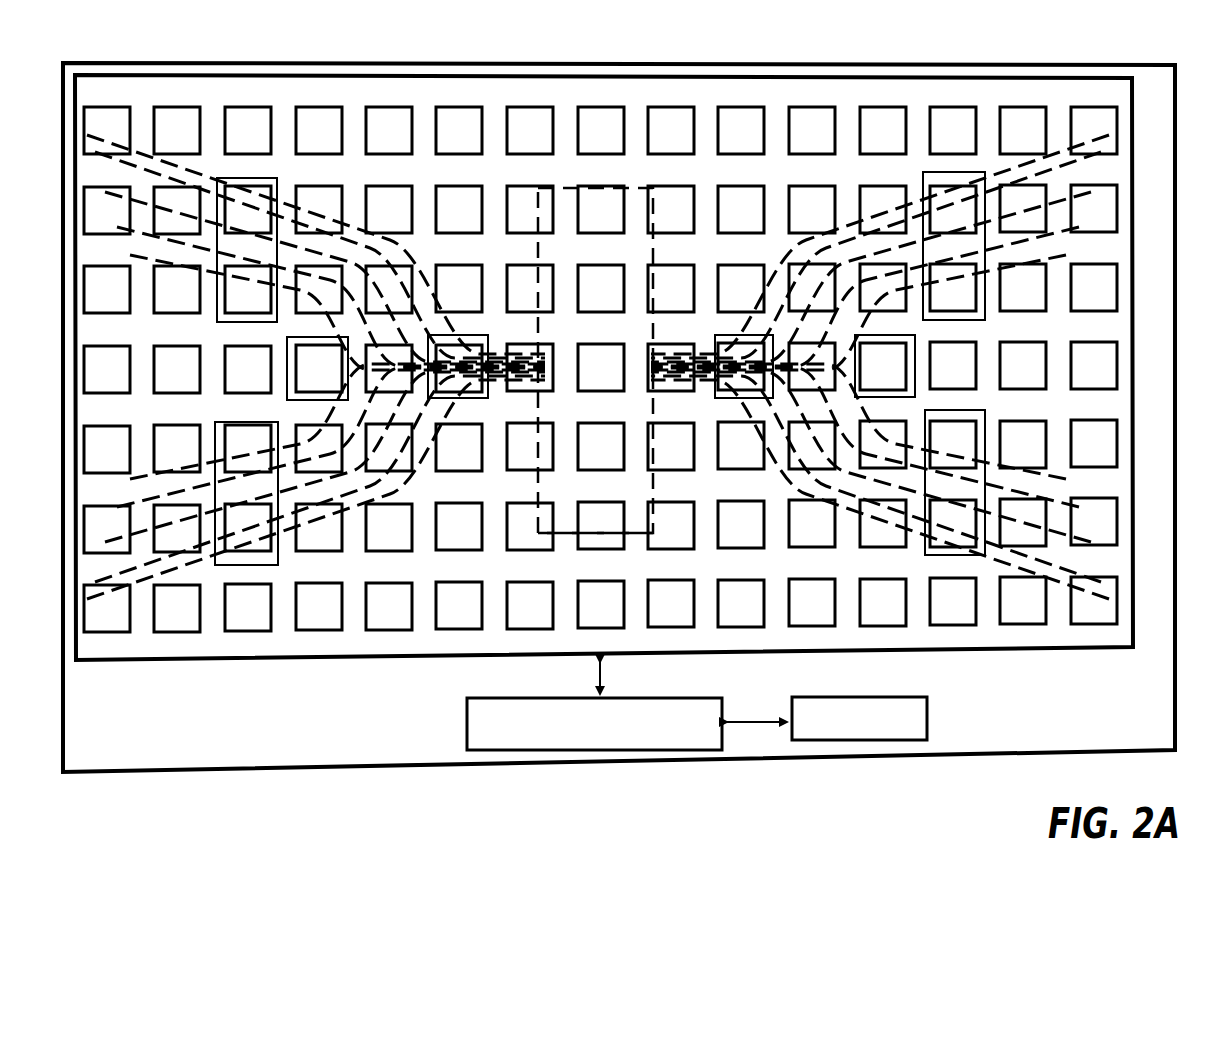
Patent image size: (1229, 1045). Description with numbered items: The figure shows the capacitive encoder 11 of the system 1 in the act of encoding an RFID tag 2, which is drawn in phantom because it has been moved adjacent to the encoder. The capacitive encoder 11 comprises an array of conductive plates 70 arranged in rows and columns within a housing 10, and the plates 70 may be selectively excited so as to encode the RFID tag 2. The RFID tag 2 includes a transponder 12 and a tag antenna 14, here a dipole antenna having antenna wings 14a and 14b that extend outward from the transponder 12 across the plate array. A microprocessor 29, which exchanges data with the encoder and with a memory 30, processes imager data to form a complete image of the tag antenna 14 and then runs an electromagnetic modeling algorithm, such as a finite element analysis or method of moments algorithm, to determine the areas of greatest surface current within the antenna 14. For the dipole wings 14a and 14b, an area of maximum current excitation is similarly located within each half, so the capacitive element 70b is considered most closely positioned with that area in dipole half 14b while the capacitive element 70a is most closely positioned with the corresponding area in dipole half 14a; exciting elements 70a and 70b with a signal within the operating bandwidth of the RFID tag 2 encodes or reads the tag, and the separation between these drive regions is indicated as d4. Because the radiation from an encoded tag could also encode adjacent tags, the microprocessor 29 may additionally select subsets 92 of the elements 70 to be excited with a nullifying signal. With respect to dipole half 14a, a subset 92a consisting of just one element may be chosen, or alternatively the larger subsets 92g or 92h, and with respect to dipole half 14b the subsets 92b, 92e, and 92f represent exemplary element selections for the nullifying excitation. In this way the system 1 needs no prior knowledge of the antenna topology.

The system 1 is at (1190, 84).
The RFID tag 2 is at (616, 181).
The housing 10 is at (1175, 650).
The capacitive encoder 11 is at (1133, 455).
The transponder 12 is at (567, 538).
The tag antenna 14 is at (348, 200).
The antenna wing 14a is at (1062, 243).
The antenna wing 14b is at (138, 243).
The microprocessor 29 is at (467, 725).
The memory 30 is at (928, 718).
The conductive plates 70 is at (526, 116).
The capacitive element 70a is at (716, 398).
The capacitive element 70b is at (488, 398).
The subsets of elements 92 is at (996, 333).
The subset 92a is at (915, 394).
The subset 92b is at (287, 398).
The subset 92e is at (217, 321).
The subset 92f is at (278, 562).
The subset 92g is at (923, 180).
The subset 92h is at (925, 553).
The distance d4 is at (494, 338).